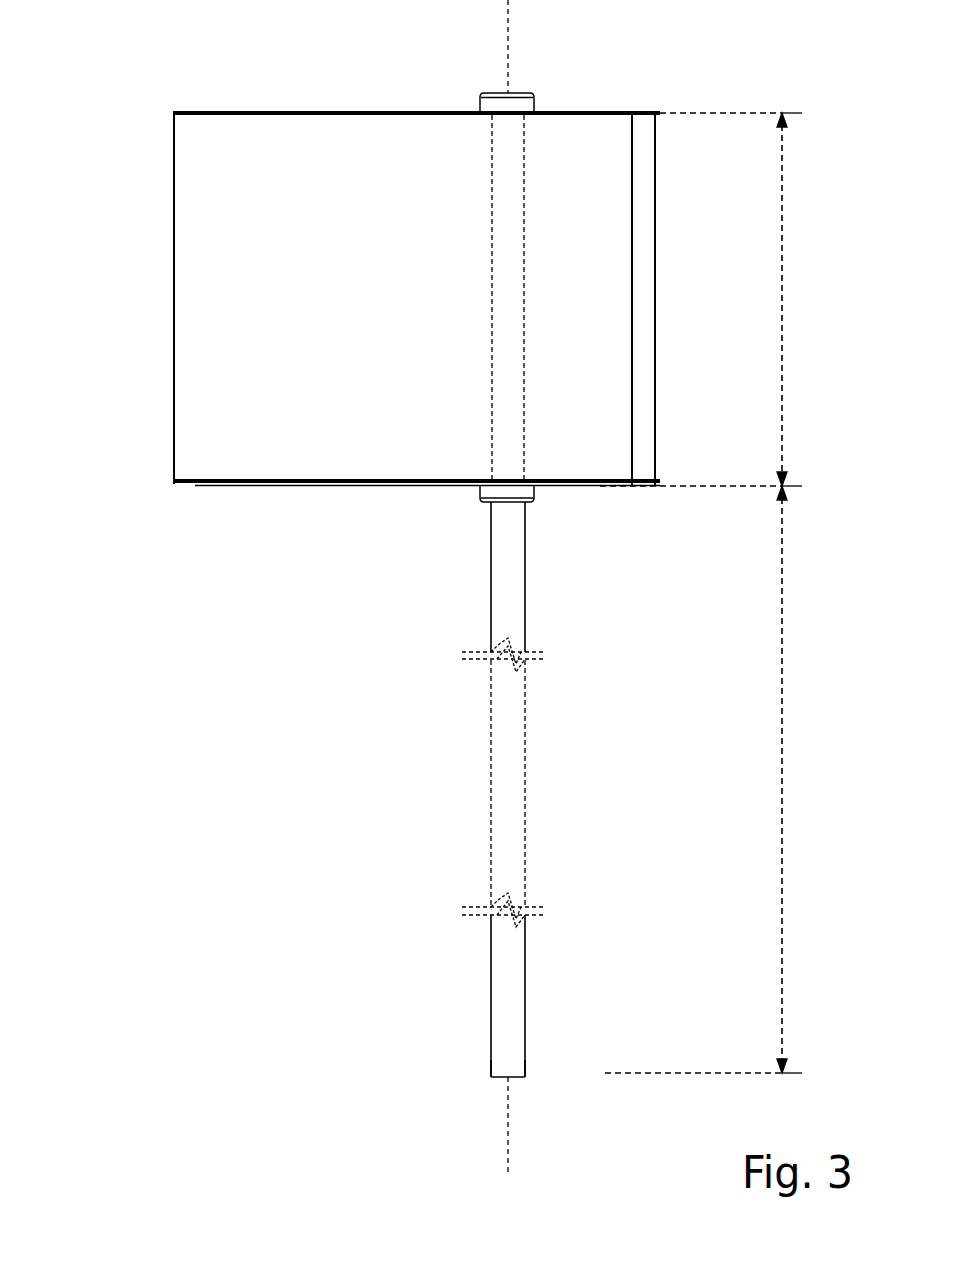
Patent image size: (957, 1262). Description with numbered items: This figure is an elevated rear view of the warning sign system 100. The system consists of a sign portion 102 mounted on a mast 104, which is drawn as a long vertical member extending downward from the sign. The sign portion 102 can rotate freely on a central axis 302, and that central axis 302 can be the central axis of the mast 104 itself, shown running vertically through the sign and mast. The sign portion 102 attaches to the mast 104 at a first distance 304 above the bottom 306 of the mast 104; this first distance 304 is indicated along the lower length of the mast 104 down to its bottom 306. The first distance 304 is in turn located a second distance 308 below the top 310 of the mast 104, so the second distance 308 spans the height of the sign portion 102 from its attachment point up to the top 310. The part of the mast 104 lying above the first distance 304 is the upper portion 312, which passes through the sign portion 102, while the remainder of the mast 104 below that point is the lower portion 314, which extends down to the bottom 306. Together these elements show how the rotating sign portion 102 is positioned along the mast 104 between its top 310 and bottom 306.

The warning sign system 100 is at (283, 582).
The sign portion 102 is at (187, 358).
The mast 104 is at (524, 565).
The central axis 302 is at (508, 43).
The first distance 304 is at (703, 779).
The bottom 306 is at (506, 1077).
The second distance 308 is at (701, 299).
The top 310 is at (517, 114).
The upper portion 312 is at (491, 297).
The lower portion 314 is at (491, 765).